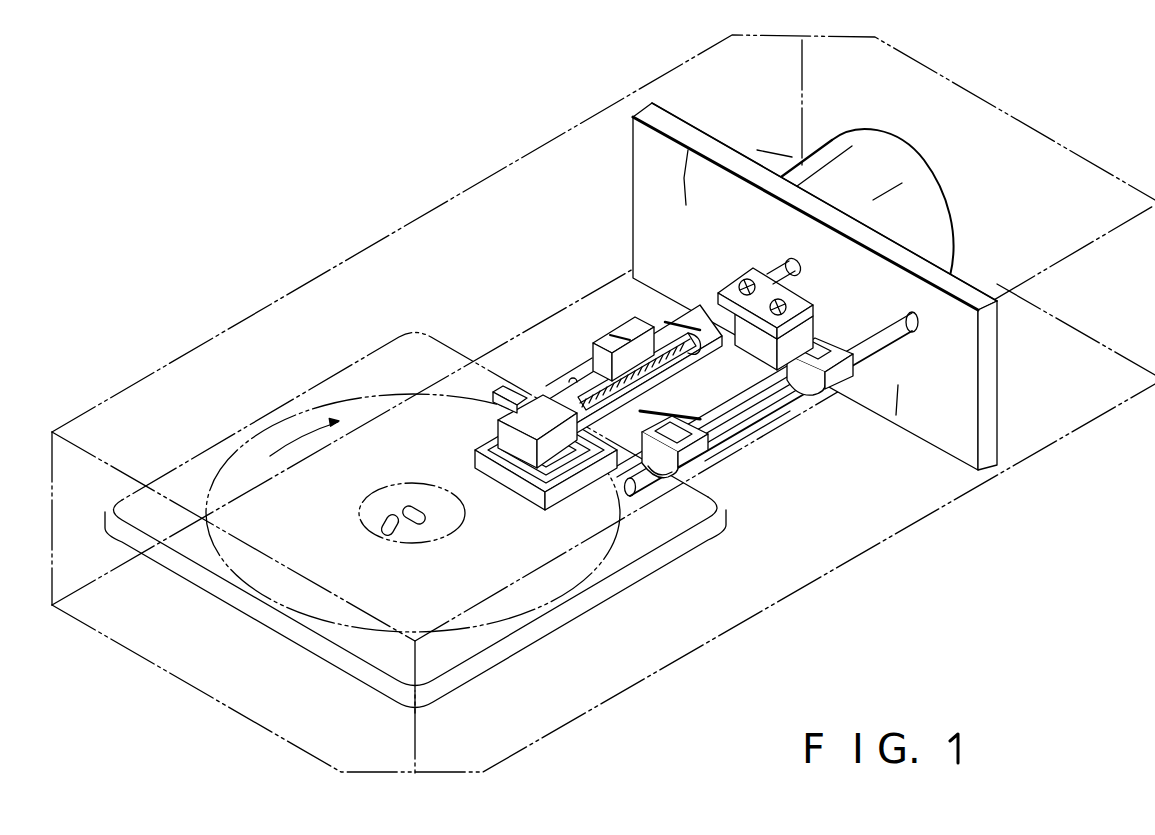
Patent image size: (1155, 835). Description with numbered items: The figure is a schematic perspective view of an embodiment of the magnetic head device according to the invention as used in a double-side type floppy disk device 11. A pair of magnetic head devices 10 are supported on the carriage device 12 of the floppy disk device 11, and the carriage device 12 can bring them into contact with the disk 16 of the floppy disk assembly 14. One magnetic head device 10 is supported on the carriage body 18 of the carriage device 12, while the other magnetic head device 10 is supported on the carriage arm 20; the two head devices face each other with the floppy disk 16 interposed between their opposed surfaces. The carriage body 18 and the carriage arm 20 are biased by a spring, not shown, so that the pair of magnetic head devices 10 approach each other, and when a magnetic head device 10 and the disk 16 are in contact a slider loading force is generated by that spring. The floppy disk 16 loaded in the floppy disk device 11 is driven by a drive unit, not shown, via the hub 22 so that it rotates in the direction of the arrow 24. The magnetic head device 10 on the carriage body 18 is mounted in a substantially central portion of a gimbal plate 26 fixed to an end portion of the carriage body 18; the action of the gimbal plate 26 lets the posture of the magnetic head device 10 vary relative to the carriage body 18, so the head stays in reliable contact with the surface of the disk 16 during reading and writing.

The magnetic head device 10 is at (543, 467).
The floppy disk device 11 is at (917, 534).
The carriage device 12 is at (780, 437).
The floppy disk assembly 14 is at (635, 593).
The disk 16 is at (372, 397).
The carriage body 18 is at (563, 492).
The carriage arm 20 is at (697, 370).
The hub 22 is at (370, 533).
The arrow 24 is at (283, 449).
The gimbal plate 26 is at (495, 446).